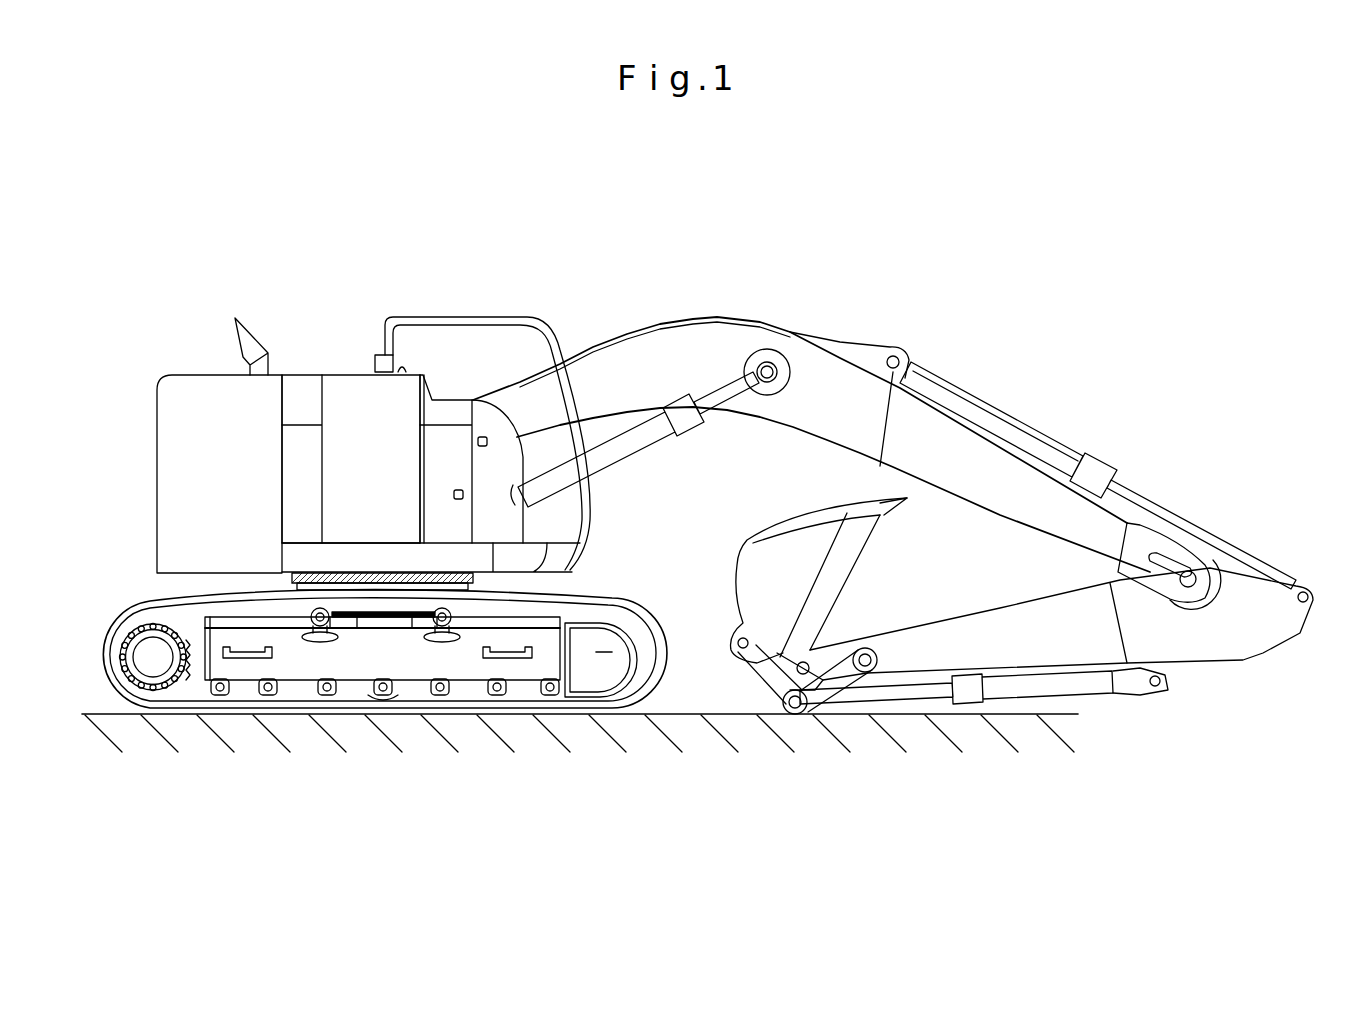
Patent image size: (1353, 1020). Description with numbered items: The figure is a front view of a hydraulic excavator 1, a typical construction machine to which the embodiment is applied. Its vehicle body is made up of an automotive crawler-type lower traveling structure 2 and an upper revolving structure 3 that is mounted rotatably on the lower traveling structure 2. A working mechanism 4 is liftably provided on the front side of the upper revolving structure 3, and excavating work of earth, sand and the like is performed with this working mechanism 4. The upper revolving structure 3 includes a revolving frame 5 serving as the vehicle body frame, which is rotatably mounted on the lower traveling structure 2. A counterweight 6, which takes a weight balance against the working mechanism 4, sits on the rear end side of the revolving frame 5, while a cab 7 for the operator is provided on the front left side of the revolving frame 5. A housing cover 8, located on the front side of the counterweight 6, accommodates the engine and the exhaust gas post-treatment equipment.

The hydraulic excavator 1 is at (597, 278).
The lower traveling structure 2 is at (357, 657).
The upper revolving structure 3 is at (296, 360).
The working mechanism 4 is at (828, 388).
The revolving frame 5 is at (563, 557).
The counterweight 6 is at (200, 410).
The cab 7 is at (507, 370).
The housing cover 8 is at (447, 460).